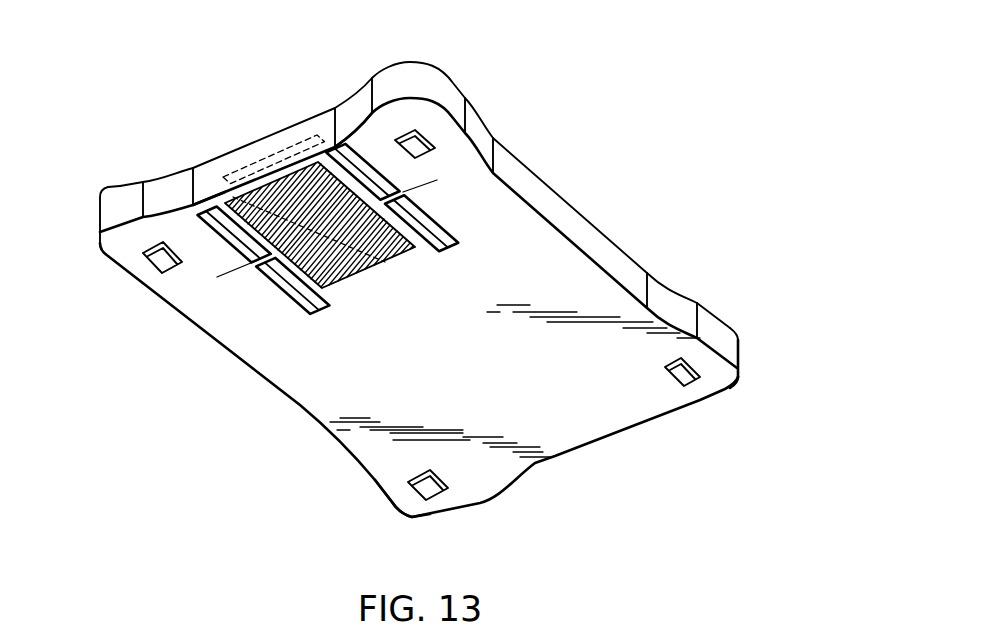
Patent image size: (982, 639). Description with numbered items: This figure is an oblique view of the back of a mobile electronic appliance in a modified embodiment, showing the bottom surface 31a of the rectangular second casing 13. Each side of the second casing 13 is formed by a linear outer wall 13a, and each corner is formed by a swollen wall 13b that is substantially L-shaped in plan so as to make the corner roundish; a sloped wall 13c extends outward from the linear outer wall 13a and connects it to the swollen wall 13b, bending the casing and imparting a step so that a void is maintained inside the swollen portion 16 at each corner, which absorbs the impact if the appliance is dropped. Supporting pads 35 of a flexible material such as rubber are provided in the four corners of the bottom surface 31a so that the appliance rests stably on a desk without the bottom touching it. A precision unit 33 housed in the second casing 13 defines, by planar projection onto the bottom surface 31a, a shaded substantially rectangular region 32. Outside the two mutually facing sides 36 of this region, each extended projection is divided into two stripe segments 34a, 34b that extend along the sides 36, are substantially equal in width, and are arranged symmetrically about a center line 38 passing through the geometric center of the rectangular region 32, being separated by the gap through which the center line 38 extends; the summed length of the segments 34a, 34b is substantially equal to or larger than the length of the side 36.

The second casing 13 is at (620, 262).
The linear outer wall 13a is at (267, 143).
The swollen wall 13b is at (422, 77).
The sloped wall 13c is at (173, 183).
The swollen portion 16 is at (732, 348).
The bottom surface 31a is at (507, 216).
The substantially rectangular region 32 is at (252, 198).
The precision unit 33 is at (295, 147).
The stripe segment 34a is at (317, 310).
The stripe segment 34b is at (143, 216).
The supporting pad 35 is at (153, 265).
The side 36 is at (213, 197).
The center line 38 is at (233, 270).